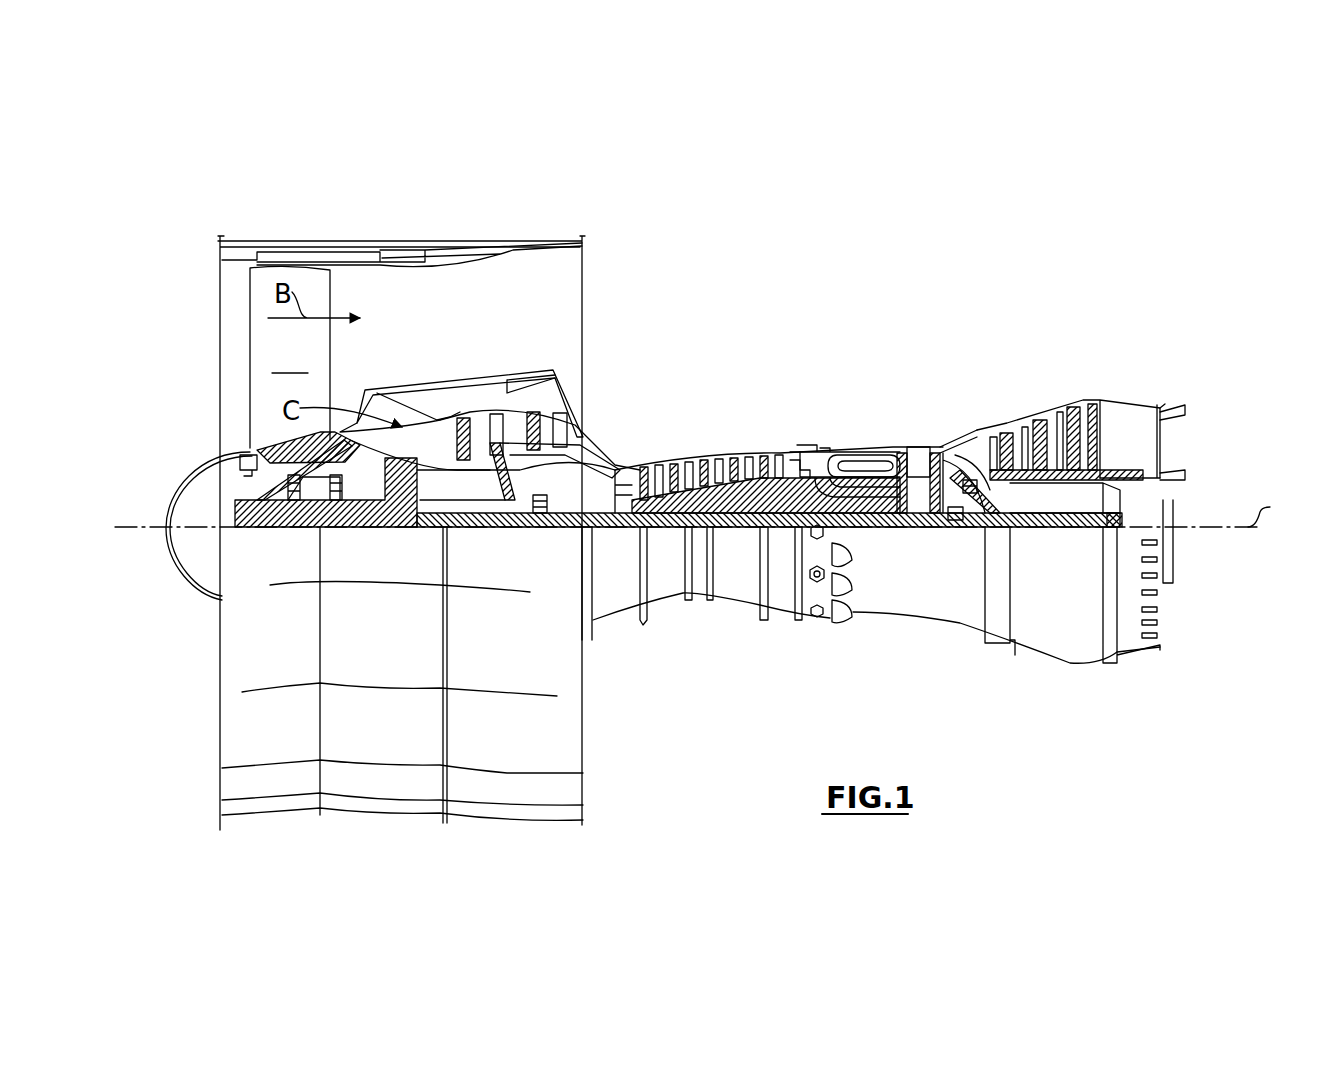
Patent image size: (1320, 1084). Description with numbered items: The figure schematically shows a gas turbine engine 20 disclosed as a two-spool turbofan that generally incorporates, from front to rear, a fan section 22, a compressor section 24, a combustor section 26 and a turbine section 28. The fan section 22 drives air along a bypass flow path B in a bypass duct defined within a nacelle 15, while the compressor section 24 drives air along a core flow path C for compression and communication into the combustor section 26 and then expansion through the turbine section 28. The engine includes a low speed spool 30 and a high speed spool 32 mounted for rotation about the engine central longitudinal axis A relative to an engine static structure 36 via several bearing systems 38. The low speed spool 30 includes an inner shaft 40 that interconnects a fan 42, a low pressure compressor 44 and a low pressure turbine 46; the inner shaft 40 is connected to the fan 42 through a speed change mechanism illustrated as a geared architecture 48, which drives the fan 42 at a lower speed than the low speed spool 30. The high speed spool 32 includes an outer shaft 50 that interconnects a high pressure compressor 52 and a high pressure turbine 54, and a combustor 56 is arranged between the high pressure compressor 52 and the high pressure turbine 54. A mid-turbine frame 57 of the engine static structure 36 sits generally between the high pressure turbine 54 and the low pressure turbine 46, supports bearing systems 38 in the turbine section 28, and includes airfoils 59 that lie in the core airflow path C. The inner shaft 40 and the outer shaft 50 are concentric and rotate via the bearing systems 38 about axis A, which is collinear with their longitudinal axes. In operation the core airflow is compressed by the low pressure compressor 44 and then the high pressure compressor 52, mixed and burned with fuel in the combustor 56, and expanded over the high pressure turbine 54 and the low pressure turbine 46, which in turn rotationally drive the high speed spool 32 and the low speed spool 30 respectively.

The nacelle 15 is at (400, 248).
The gas turbine engine 20 is at (866, 291).
The fan section 22 is at (331, 229).
The compressor section 24 is at (634, 430).
The combustor section 26 is at (856, 418).
The turbine section 28 is at (1004, 381).
The low speed spool 30 is at (740, 541).
The high speed spool 32 is at (785, 480).
The engine static structure 36 is at (781, 618).
The bearing systems 38 is at (538, 510).
The inner shaft 40 is at (600, 528).
The fan 42 is at (290, 357).
The low pressure compressor 44 is at (517, 432).
The low pressure turbine 46 is at (1050, 408).
The geared architecture 48 is at (405, 507).
The outer shaft 50 is at (868, 518).
The high pressure compressor 52 is at (714, 495).
The high pressure turbine 54 is at (922, 447).
The combustor 56 is at (857, 468).
The mid-turbine frame 57 is at (970, 426).
The airfoils 59 is at (1000, 492).